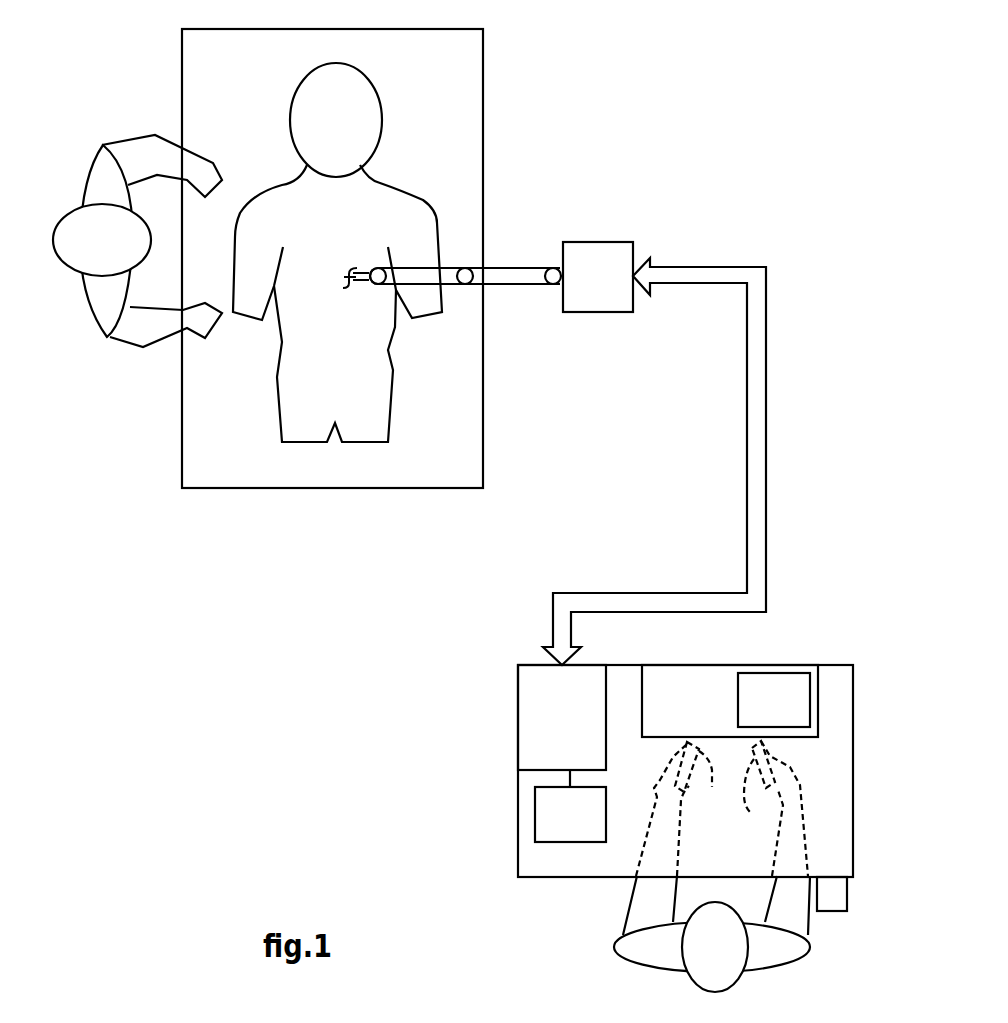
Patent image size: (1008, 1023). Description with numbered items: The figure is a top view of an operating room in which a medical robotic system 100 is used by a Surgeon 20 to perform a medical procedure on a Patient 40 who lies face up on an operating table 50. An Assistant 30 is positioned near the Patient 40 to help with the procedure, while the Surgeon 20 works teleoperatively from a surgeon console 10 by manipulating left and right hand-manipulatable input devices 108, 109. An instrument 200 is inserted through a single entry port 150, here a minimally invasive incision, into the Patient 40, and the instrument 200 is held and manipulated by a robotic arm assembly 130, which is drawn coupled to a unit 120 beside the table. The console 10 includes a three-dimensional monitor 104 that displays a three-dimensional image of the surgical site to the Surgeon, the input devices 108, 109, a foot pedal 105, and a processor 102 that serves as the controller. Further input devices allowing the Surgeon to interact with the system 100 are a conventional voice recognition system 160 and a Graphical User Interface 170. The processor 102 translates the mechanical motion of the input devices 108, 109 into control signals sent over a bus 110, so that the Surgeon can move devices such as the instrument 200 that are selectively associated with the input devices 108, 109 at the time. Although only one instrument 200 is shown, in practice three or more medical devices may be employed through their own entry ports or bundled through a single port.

The surgeon console 10 is at (828, 665).
The Surgeon 20 is at (768, 968).
The Assistant 30 is at (88, 306).
The Patient 40 is at (280, 183).
The operating table 50 is at (413, 29).
The medical robotic system 100 is at (683, 113).
The processor 102 is at (562, 717).
The 3-D monitor 104 is at (730, 701).
The foot pedal 105 is at (835, 911).
The left hand-manipulatable input device 108 is at (683, 809).
The right hand-manipulatable input device 109 is at (768, 808).
The bus 110 is at (747, 545).
The bedside controller 120 is at (598, 277).
The robotic arm assembly 130 is at (497, 259).
The entry port 150 is at (339, 276).
The voice recognition system 160 is at (570, 806).
The Graphical User Interface 170 is at (774, 700).
The instrument 200 is at (360, 266).